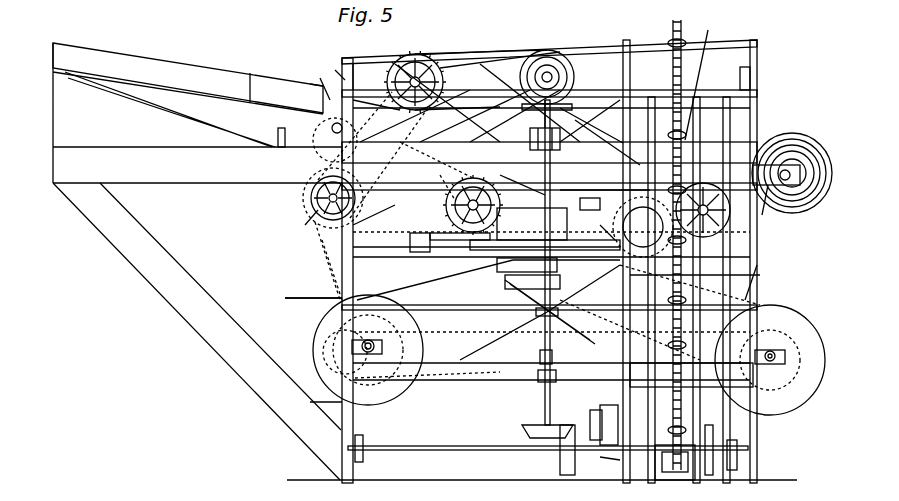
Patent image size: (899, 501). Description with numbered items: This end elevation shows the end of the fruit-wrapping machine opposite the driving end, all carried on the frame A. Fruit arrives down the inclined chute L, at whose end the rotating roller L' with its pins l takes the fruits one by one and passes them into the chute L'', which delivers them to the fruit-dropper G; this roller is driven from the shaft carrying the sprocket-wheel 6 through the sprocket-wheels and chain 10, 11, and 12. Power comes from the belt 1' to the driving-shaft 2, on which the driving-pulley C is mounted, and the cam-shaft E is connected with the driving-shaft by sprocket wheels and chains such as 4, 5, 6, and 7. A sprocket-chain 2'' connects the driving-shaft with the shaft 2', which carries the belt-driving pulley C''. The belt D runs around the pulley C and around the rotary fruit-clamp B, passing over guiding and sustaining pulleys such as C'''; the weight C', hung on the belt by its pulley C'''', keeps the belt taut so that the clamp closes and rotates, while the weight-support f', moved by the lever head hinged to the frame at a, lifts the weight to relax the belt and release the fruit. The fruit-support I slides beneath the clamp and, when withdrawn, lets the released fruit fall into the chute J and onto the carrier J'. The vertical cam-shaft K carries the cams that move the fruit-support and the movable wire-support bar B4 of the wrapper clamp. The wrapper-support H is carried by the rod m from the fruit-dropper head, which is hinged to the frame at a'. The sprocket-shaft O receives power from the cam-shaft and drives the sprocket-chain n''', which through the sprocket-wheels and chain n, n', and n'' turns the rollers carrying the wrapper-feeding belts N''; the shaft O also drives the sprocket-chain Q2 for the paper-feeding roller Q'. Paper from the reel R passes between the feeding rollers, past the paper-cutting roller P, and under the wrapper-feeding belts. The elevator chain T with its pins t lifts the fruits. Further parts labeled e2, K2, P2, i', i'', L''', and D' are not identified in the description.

The frame A is at (752, 262).
The chute L is at (197, 261).
The rotating roller L' is at (309, 92).
The pins l is at (284, 124).
The sprocket-wheel and chain 10 is at (335, 140).
The sprocket-wheel and chain 11 is at (321, 82).
The hinge a is at (324, 64).
The hinge a' is at (360, 77).
The sprocket-shaft O is at (376, 101).
The sprocket-chain Q2 is at (430, 58).
The paper-feeding roller Q' is at (500, 48).
The belt e2 is at (556, 58).
The cam-shaft E is at (575, 77).
The rod K2 is at (600, 130).
The rod m is at (540, 130).
The bearing P2 is at (559, 143).
The sprocket-wheel and chain 12 is at (329, 195).
The sprocket-wheel 6 is at (308, 222).
The sprocket wheel and chain 5 is at (327, 261).
The sprocket wheel and chain 4 is at (320, 268).
The belt 1' is at (313, 309).
The sprocket wheel and chain 7 is at (374, 215).
The sprocket-wheel and chain n'' is at (460, 205).
The chute L'' is at (436, 160).
The sprocket-chain n''' is at (445, 180).
The sprocket-wheel and chain n' is at (522, 176).
The movable wire-support bar B4 is at (446, 238).
The fruit-dropper G is at (605, 204).
The wrapper-feeding belts N'' is at (543, 226).
The wrapper-support H is at (545, 248).
The sprocket-wheel and chain n is at (606, 233).
The paper-cutting roller P is at (643, 227).
The paper reel R is at (792, 173).
The pin i' is at (788, 184).
The arm i'' is at (768, 214).
The pins t is at (672, 300).
The elevator chain T is at (695, 279).
The belt D is at (558, 310).
The fruit-clamp B is at (505, 272).
The fruit-support I is at (512, 289).
The strut L''' is at (557, 312).
The guiding and sustaining pulley C''' is at (630, 316).
The chute J is at (539, 262).
The vertical cam-shaft K is at (540, 392).
The pulley C'''' is at (577, 415).
The weight C' is at (602, 425).
The weight-support f' is at (608, 466).
The carrier J' is at (685, 452).
The driving-pulley C is at (368, 350).
The driving-shaft 2 is at (343, 354).
The sprocket-chain 2'' is at (427, 356).
The belt-driving pulley C'' is at (770, 360).
The shaft 2' is at (774, 377).
The brace D' is at (760, 282).